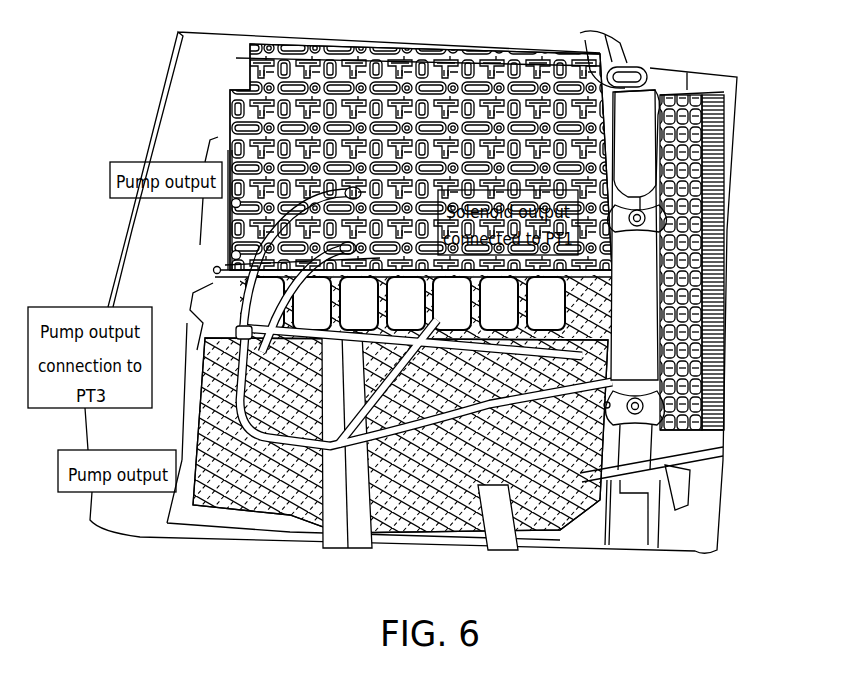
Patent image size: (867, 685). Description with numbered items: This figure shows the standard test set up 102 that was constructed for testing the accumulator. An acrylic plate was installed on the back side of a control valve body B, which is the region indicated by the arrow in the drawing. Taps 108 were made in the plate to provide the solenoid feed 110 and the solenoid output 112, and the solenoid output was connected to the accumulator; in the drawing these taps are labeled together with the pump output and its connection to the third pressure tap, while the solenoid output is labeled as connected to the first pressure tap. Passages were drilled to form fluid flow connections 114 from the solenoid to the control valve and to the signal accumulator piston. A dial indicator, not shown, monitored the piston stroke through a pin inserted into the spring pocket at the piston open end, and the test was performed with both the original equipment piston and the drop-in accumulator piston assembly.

The control valve body B is at (315, 166).
The test set up 102 is at (213, 352).
The taps 108 is at (129, 248).
The solenoid feed 110 is at (232, 205).
The solenoid output 112 is at (213, 271).
The fluid flow connections 114 is at (645, 85).